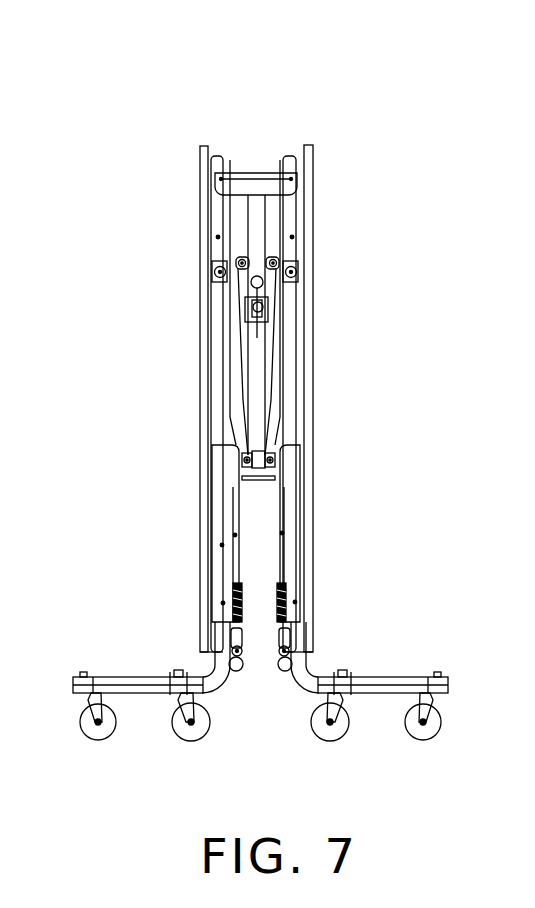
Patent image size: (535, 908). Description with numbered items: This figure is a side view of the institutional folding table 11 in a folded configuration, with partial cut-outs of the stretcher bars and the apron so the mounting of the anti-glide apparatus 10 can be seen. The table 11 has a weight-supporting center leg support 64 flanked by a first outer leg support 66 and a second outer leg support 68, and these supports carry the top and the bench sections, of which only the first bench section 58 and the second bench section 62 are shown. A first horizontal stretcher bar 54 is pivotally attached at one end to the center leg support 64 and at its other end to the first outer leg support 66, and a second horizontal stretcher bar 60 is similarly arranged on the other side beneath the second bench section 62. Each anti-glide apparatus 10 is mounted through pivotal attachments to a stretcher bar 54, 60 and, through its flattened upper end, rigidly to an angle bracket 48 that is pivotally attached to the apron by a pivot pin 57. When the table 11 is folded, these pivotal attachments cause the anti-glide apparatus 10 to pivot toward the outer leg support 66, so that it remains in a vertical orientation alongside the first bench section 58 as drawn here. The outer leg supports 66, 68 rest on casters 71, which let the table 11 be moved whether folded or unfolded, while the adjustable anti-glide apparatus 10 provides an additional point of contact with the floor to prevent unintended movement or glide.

The institutional folding table 11 is at (283, 113).
The center leg support 64 is at (258, 218).
The first bench section 58 is at (205, 250).
The second bench section 62 is at (307, 343).
The angle bracket 48 is at (218, 445).
The first horizontal stretcher bar 54 is at (235, 510).
The second horizontal stretcher bar 60 is at (283, 510).
The pivot pin 57 is at (303, 448).
The anti-glide apparatus 10 is at (235, 600).
The first outer leg support 66 is at (207, 670).
The second outer leg support 68 is at (315, 668).
The casters 71 is at (192, 738).